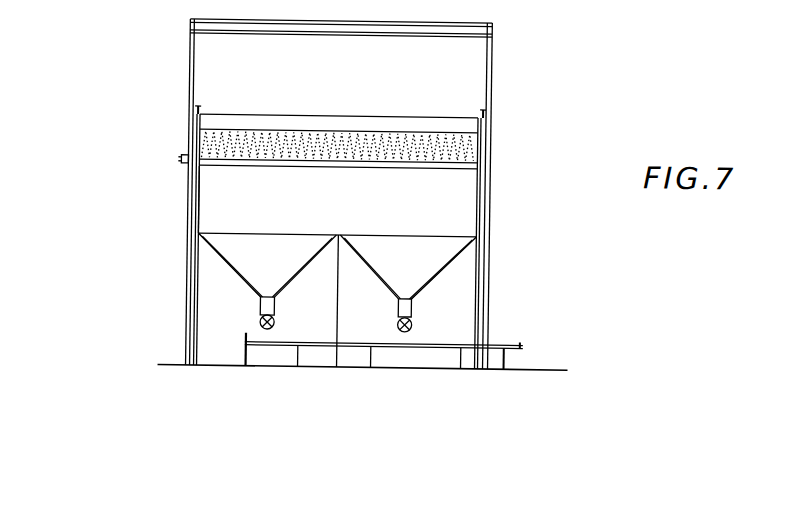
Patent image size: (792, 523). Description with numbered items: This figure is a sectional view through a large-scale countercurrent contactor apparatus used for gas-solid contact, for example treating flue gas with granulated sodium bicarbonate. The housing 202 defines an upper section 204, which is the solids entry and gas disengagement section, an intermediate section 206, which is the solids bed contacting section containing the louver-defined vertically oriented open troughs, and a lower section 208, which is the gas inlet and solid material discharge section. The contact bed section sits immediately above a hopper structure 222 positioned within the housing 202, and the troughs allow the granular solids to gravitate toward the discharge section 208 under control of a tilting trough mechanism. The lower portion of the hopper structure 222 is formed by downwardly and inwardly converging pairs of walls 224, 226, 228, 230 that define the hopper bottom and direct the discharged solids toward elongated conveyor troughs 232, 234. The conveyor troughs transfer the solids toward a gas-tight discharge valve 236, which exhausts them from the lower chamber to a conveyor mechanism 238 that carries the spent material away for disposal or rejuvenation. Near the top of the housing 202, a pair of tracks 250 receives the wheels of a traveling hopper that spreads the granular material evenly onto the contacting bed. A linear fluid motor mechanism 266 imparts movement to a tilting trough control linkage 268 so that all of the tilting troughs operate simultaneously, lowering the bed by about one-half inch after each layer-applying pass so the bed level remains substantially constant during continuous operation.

The housing 202 is at (194, 237).
The upper section 204 is at (358, 64).
The intermediate section 206 is at (346, 130).
The lower section 208 is at (359, 210).
The hopper structure 222 is at (200, 228).
The converging wall 224 is at (272, 236).
The converging wall 226 is at (305, 268).
The converging wall 228 is at (370, 262).
The converging wall 230 is at (445, 274).
The conveyor trough 232 is at (262, 306).
The conveyor trough 234 is at (415, 305).
The gas-tight discharge valve 236 is at (262, 324).
The conveyor mechanism 238 is at (527, 345).
The tracks 250 is at (199, 108).
The linear fluid motor mechanism 266 is at (180, 161).
The tilting trough control linkage 268 is at (378, 169).